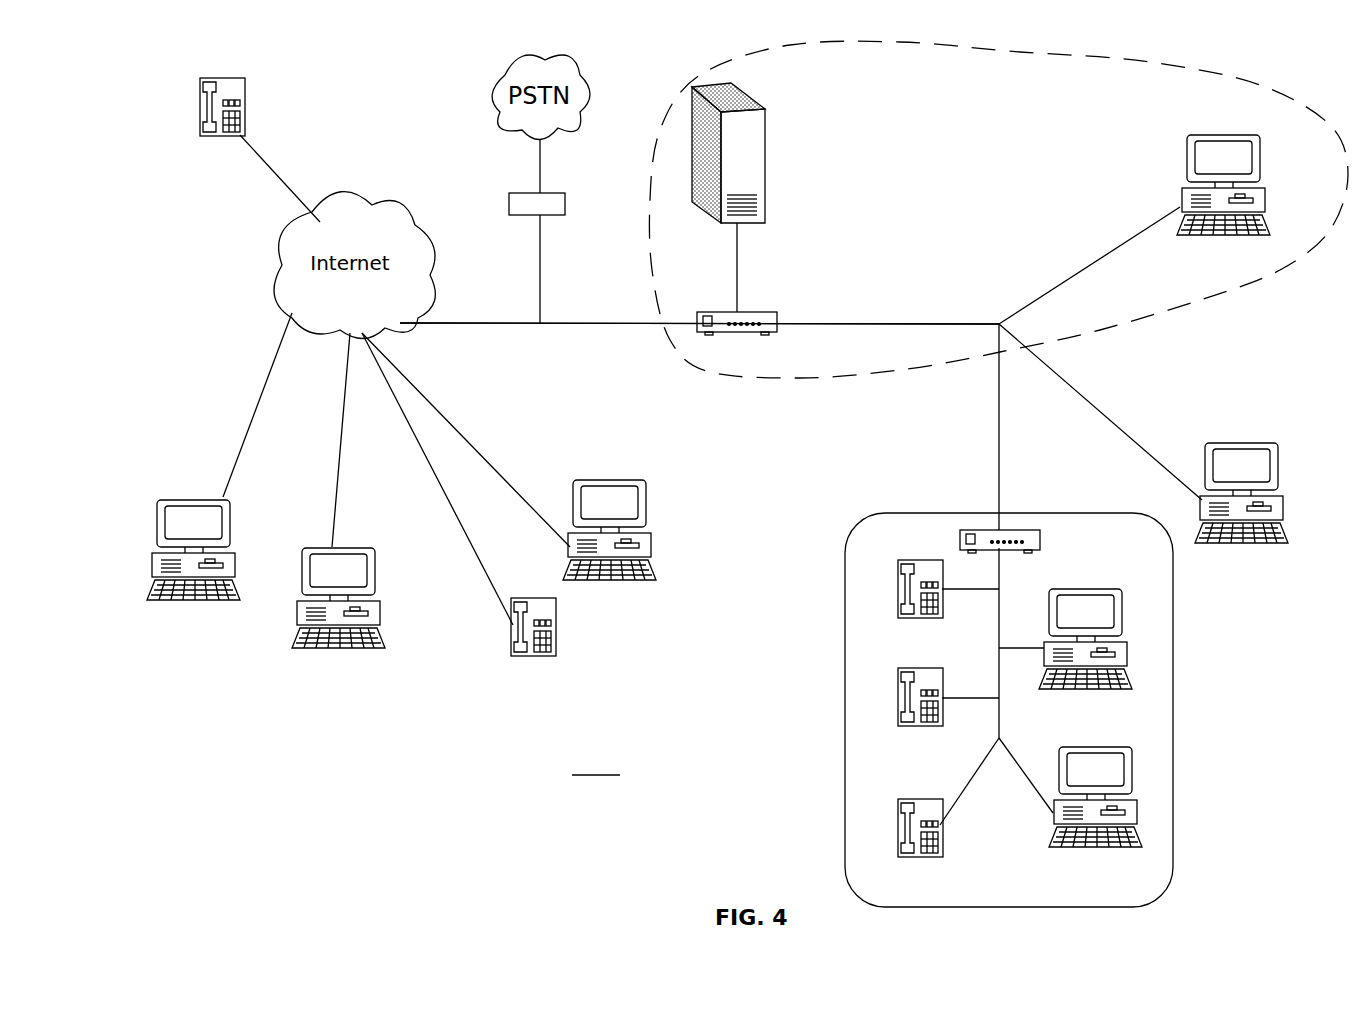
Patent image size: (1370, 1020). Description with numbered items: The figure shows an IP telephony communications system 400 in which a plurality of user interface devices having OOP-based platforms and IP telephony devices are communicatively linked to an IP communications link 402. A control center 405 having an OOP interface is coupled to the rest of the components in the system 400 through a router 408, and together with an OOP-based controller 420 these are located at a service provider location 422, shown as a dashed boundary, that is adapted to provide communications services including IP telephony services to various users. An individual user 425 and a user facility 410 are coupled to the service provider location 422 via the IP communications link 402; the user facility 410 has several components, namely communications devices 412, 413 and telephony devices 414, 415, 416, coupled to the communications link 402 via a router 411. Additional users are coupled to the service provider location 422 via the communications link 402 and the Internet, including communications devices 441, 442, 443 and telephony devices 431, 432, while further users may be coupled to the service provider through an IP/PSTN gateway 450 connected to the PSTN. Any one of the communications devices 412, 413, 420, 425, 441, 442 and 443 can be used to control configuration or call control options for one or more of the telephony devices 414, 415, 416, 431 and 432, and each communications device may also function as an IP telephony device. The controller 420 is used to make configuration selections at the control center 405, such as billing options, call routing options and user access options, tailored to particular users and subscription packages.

The IP telephony communications system 400 is at (593, 758).
The IP communications link 402 is at (937, 323).
The control center 405 is at (757, 100).
The router 408 is at (765, 310).
The user facility 410 is at (1176, 680).
The router 411 is at (1038, 537).
The communications device 412 is at (1112, 572).
The communications device 413 is at (1113, 760).
The telephony device 414 is at (897, 584).
The telephony device 415 is at (897, 690).
The telephony device 416 is at (897, 815).
The OOP-based controller 420 is at (1261, 160).
The service provider location 422 is at (763, 383).
The individual user 425 is at (1283, 475).
The telephony device 431 is at (237, 78).
The telephony device 432 is at (538, 655).
The communications device 441 is at (608, 480).
The communications device 442 is at (355, 548).
The communications device 443 is at (168, 500).
The IP/PSTN gateway 450 is at (560, 216).